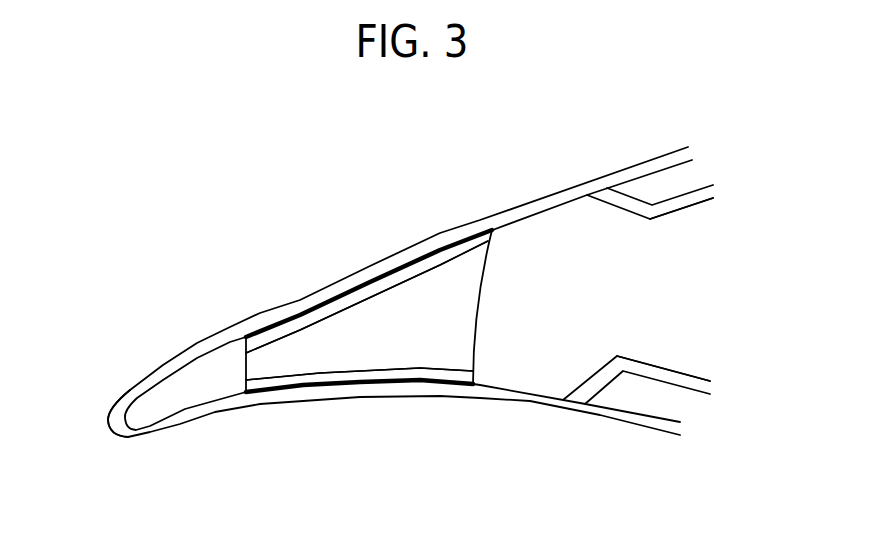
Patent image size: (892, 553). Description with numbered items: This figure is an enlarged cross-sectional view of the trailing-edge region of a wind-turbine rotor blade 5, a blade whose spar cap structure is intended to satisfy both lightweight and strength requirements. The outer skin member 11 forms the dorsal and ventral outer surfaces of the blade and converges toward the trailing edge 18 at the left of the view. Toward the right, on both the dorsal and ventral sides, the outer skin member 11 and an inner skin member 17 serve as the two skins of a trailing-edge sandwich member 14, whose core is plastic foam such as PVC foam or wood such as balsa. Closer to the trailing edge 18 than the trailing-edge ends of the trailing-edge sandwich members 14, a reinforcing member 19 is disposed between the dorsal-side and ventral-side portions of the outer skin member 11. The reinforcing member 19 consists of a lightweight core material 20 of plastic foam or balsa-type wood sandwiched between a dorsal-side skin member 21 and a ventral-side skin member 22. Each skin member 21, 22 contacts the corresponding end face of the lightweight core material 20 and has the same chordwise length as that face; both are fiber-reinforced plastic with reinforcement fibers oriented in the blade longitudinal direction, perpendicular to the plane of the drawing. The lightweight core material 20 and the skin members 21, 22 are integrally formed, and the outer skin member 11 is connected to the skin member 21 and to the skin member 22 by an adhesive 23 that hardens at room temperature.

The wind-turbine rotor blade 5 is at (184, 156).
The outer skin member 11 is at (530, 204).
The trailing-edge sandwich member 14 is at (662, 180).
The inner skin member 17 is at (687, 206).
The trailing edge 18 is at (108, 430).
The reinforcing member 19 is at (545, 243).
The lightweight core material 20 is at (452, 309).
The dorsal-side skin member 21 is at (467, 250).
The ventral-side skin member 22 is at (448, 372).
The adhesive 23 is at (332, 299).